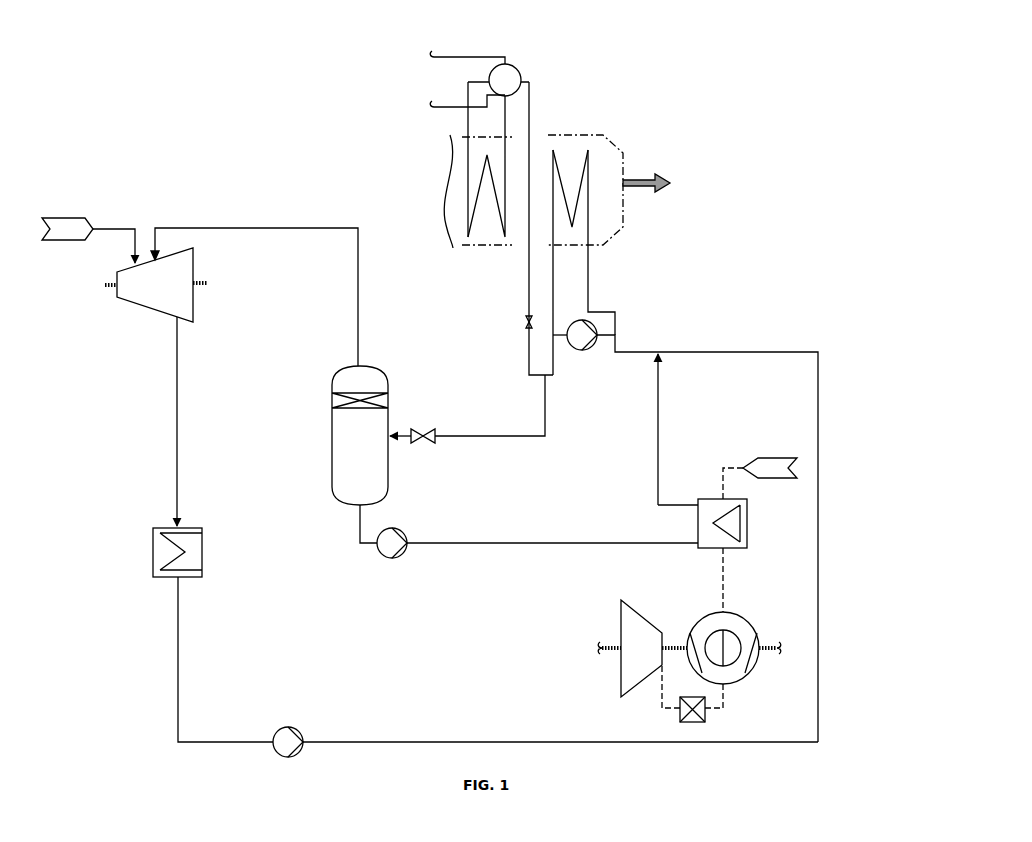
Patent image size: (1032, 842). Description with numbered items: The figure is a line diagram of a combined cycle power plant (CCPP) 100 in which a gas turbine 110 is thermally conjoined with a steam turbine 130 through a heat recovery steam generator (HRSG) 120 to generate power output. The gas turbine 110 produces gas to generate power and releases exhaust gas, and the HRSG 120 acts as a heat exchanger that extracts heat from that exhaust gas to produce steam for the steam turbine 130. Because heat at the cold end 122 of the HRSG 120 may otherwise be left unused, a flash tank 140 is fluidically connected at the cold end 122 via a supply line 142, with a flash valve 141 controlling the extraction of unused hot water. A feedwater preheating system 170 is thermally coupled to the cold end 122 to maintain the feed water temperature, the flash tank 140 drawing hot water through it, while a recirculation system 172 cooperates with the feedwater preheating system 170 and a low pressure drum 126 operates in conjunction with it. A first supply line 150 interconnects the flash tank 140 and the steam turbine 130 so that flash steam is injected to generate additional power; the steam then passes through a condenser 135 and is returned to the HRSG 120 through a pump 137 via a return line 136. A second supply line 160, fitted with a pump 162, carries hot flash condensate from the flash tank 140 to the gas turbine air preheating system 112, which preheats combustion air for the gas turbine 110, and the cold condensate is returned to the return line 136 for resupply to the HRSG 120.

The combined cycle power plant 100 is at (778, 206).
The gas turbine 110 is at (592, 663).
The gas turbine air preheating system 112 is at (755, 549).
The heat recovery steam generator 120 is at (629, 223).
The cold end 122 is at (567, 150).
The low pressure drum 126 is at (428, 143).
The steam turbine 130 is at (125, 318).
The condenser 135 is at (146, 582).
The return line 136 is at (724, 538).
The pump 137 is at (304, 757).
The flash tank 140 is at (324, 410).
The flash valve 141 is at (423, 419).
The supply line 142 is at (490, 417).
The first supply line 150 is at (271, 297).
The second supply line 160 is at (552, 557).
The pump 162 is at (403, 565).
The feedwater preheating system 170 is at (603, 294).
The recirculation system 172 is at (595, 360).